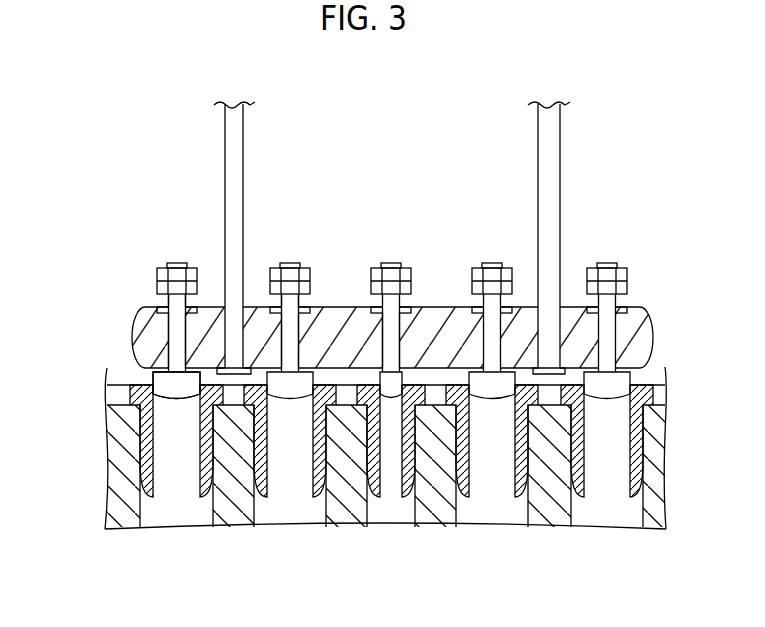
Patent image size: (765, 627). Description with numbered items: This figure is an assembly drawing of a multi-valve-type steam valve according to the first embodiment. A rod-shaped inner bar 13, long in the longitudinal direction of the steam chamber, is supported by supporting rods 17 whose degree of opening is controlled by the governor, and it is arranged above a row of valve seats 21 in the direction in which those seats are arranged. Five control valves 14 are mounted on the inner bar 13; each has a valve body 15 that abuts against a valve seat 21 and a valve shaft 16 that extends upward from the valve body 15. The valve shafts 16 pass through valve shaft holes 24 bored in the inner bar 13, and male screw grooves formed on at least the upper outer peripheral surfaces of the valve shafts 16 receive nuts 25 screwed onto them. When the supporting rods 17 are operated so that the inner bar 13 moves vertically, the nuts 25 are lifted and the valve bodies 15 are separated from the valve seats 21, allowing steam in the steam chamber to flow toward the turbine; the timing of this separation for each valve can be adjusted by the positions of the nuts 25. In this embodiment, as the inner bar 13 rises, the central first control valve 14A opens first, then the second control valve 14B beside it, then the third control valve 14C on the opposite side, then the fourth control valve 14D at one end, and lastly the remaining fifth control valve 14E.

The inner bar 13 is at (143, 323).
The control valves 14 is at (152, 373).
The first control valve 14A is at (391, 262).
The second control valve 14B is at (290, 262).
The third control valve 14C is at (492, 262).
The fourth control valve 14D is at (177, 262).
The fifth control valve 14E is at (607, 262).
The valve bodies 15 is at (178, 398).
The valve shafts 16 is at (176, 300).
The supporting rods 17 is at (244, 121).
The valve seats 21 is at (143, 427).
The valve shaft holes 24 is at (187, 318).
The nuts 25 is at (181, 338).